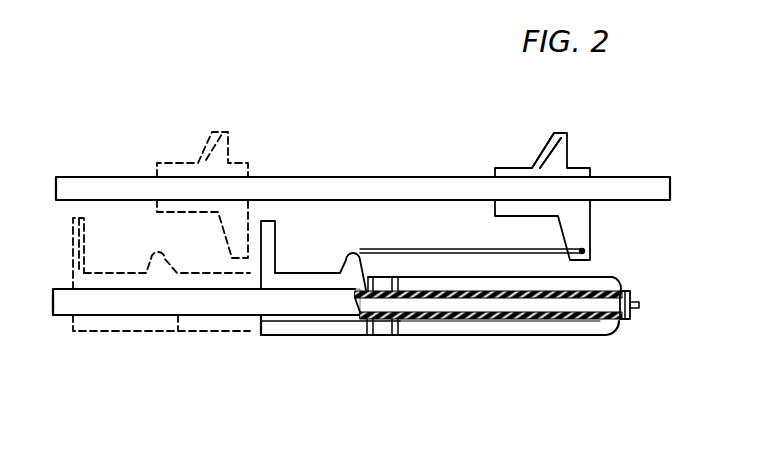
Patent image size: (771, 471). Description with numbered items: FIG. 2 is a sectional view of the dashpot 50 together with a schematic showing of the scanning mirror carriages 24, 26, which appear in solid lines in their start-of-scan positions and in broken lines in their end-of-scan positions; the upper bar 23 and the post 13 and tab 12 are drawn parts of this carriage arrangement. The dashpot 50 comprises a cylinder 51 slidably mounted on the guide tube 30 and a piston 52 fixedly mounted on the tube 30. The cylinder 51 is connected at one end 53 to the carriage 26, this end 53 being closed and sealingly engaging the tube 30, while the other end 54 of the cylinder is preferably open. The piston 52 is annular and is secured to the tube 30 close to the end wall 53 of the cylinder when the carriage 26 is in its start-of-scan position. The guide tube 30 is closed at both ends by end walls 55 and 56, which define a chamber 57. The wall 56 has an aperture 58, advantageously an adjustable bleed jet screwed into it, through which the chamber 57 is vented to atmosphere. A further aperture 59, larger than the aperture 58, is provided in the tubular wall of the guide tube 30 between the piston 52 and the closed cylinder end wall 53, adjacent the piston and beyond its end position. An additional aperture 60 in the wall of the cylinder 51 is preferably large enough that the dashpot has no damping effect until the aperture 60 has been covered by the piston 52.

The tab 12 is at (532, 160).
The post 13 is at (278, 250).
The upper slide bar 23 is at (68, 177).
The scanning mirror carriage 24 is at (229, 150).
The scanning mirror carriage 26 is at (108, 273).
The guide tube 30 is at (60, 316).
The dashpot 50 is at (480, 346).
The cylinder 51 is at (208, 333).
The piston 52 is at (410, 337).
The closed end of cylinder 53 is at (377, 337).
The open end of cylinder 54 is at (619, 288).
The end wall 55 is at (52, 300).
The end wall 56 is at (623, 324).
The chamber 57 is at (580, 337).
The aperture 58 is at (640, 307).
The aperture 59 is at (385, 290).
The aperture 60 is at (498, 277).